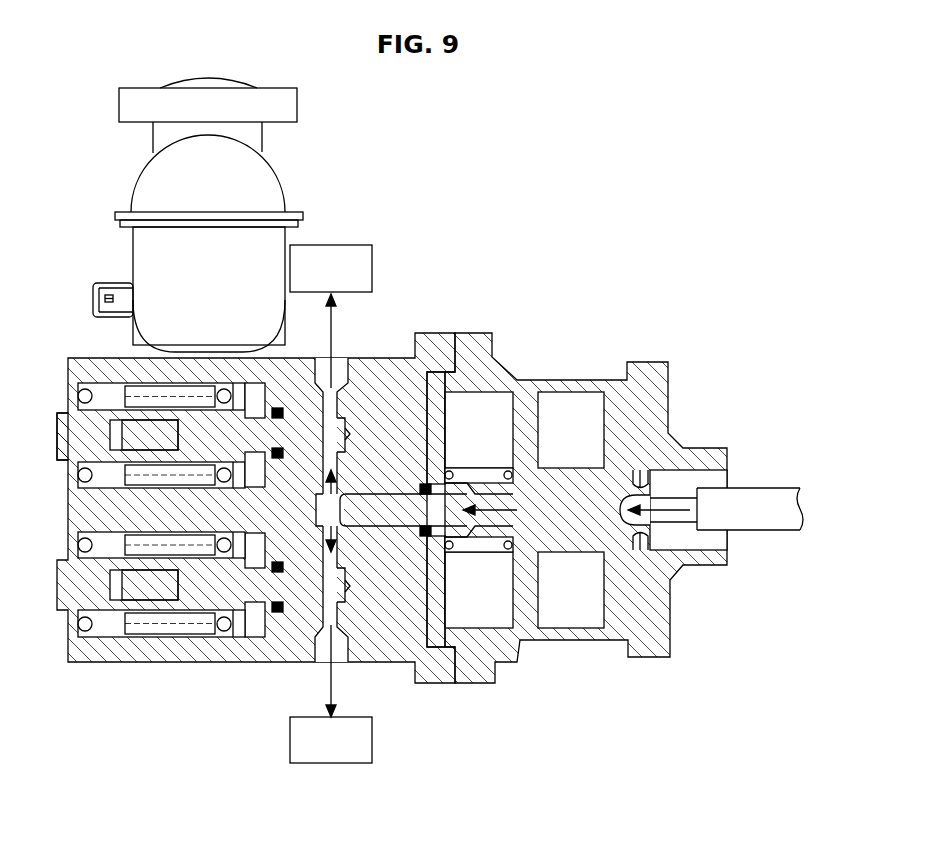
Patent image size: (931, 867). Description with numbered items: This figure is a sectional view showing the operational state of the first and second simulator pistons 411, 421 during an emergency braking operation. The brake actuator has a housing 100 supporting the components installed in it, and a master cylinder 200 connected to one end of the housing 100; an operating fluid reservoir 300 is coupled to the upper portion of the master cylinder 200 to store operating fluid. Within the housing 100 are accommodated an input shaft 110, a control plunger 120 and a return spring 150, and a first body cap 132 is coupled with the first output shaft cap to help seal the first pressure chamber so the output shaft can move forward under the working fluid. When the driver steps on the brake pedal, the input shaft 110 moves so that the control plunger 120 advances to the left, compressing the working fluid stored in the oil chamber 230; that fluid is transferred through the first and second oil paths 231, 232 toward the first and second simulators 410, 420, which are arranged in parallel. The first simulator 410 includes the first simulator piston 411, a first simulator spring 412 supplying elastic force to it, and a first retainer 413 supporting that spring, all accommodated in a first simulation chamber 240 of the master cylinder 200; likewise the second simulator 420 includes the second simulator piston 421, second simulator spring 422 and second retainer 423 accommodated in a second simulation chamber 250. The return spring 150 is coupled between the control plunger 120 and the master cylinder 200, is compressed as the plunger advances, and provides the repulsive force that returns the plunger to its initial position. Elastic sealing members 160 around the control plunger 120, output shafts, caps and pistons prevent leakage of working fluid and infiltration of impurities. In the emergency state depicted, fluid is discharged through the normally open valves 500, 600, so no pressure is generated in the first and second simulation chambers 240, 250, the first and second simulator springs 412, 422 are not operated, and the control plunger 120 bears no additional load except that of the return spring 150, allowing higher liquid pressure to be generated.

The housing 100 is at (586, 490).
The input shaft 110 is at (711, 535).
The control plunger 120 is at (681, 538).
The first body cap 132 is at (460, 470).
The return spring 150 is at (481, 597).
The elastic sealing members 160 is at (350, 511).
The master cylinder 200 is at (416, 530).
The oil chamber 230 is at (403, 424).
The first oil path 231 is at (345, 394).
The second oil path 232 is at (344, 621).
The first simulation chamber 240 is at (193, 490).
The second simulation chamber 250 is at (161, 617).
The operating fluid reservoir 300 is at (210, 215).
The first simulator 410 is at (210, 386).
The first simulator piston 411 is at (281, 465).
The first simulator spring 412 is at (170, 398).
The first retainer 413 is at (43, 413).
The second simulator 420 is at (162, 651).
The second simulator piston 421 is at (235, 622).
The second simulator spring 422 is at (170, 632).
The second retainer 423 is at (94, 634).
The NO valve 500 is at (331, 244).
The NO valve 600 is at (331, 762).